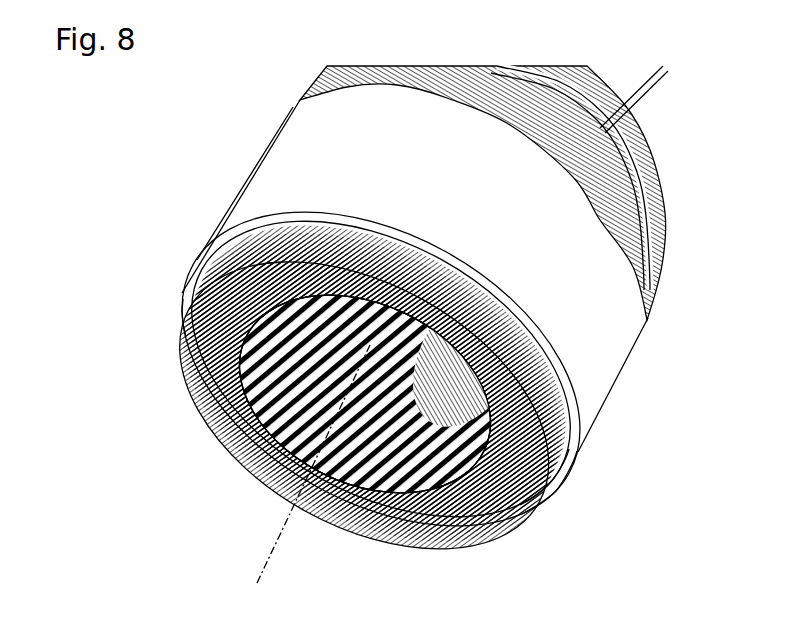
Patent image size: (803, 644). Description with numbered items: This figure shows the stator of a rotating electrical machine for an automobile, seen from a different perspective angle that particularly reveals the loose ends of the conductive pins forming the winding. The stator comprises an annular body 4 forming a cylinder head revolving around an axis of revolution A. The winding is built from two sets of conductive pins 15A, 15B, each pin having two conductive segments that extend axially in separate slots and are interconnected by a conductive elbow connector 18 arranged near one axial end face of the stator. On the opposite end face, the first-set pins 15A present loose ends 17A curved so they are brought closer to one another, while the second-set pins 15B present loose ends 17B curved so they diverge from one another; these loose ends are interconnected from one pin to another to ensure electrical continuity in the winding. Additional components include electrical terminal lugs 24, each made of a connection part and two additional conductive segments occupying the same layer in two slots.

The annular body 4 is at (240, 180).
The conductive pins 15A is at (200, 318).
The conductive pins 15B is at (540, 512).
The loose ends 17A is at (321, 387).
The loose ends 17B is at (162, 387).
The elbow connector 18 is at (658, 200).
The electrical terminal lugs 24 is at (640, 153).
The axis of revolution A is at (257, 583).